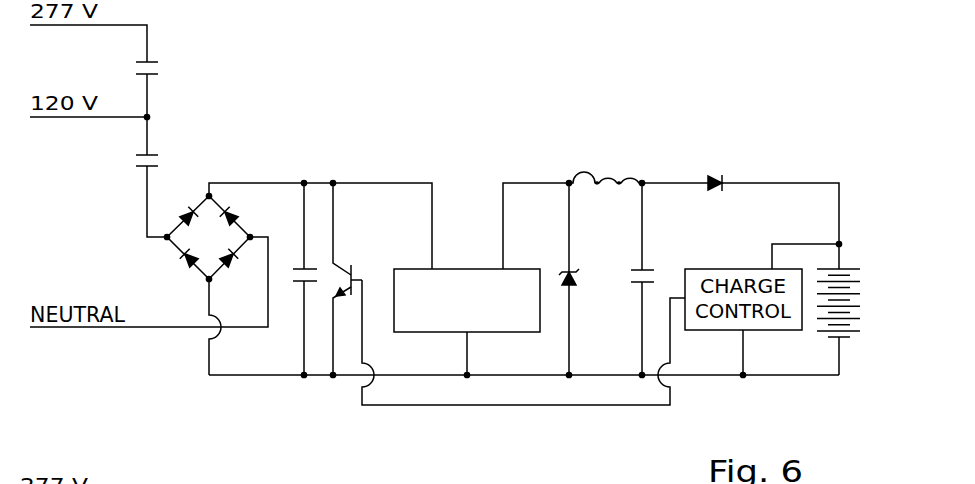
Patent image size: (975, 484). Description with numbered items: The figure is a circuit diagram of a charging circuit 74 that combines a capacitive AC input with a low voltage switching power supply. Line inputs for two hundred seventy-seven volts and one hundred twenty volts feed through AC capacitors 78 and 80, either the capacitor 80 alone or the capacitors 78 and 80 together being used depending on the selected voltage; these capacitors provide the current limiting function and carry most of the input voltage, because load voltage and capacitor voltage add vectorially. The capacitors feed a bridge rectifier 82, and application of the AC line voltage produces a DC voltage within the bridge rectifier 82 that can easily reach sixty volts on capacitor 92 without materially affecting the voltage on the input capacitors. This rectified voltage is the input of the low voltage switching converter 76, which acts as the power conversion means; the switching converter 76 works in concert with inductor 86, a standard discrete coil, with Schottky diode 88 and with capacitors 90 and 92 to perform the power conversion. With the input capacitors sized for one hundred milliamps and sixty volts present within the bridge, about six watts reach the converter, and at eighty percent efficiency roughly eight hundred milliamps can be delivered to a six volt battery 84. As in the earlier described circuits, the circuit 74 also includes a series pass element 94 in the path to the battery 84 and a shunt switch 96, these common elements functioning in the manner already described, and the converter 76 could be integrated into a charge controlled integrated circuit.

The charging circuit 74 is at (486, 125).
The low voltage switching converter 76 is at (500, 332).
The AC capacitor 78 is at (157, 80).
The AC capacitor 80 is at (157, 170).
The bridge rectifier 82 is at (247, 213).
The battery 84 is at (852, 262).
The inductor 86 is at (608, 160).
The Schottky diode 88 is at (578, 261).
The capacitor 90 is at (652, 261).
The capacitor 92 is at (293, 293).
The series pass element 94 is at (728, 164).
The shunt switch 96 is at (350, 256).